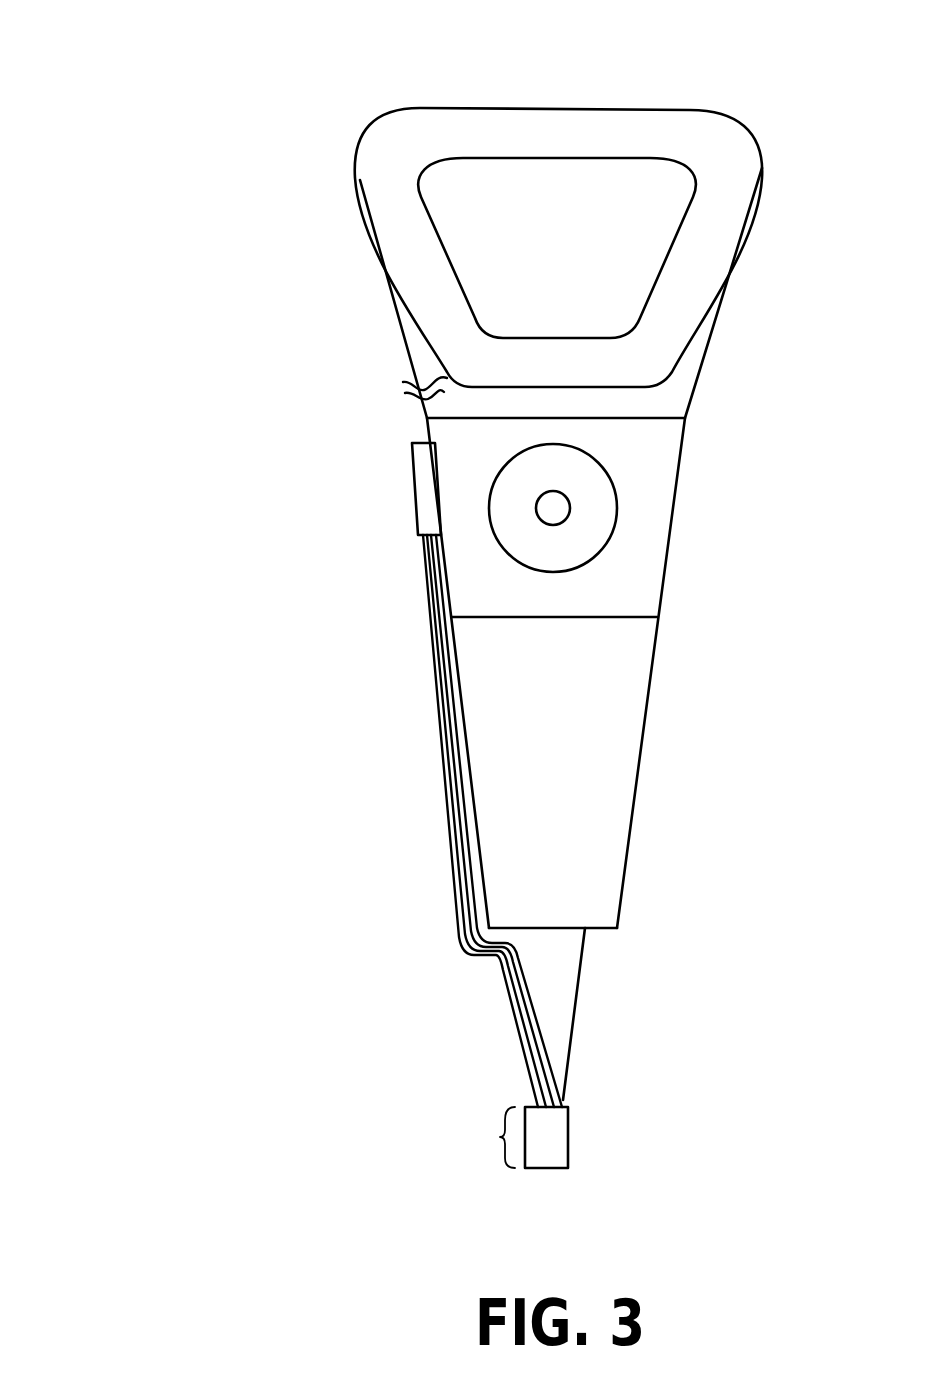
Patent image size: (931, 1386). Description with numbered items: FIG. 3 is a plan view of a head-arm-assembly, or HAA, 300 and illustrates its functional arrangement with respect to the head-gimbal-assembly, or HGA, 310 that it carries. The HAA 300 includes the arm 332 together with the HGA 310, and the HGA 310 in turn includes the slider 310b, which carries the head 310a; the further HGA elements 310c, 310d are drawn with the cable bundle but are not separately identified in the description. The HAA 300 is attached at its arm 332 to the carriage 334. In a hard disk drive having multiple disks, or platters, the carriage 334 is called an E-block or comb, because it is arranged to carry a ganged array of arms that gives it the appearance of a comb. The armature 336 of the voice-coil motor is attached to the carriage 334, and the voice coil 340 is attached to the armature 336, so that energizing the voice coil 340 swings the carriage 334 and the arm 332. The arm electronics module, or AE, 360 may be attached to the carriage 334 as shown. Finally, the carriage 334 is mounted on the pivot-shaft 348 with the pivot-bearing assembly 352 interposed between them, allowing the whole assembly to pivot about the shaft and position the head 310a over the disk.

The head-arm-assembly (HAA) 300 is at (118, 85).
The voice coil 340 is at (425, 277).
The armature 336 is at (425, 357).
The AE (arm electronics) 360 is at (427, 500).
The pivot-shaft 348 is at (553, 508).
The pivot-bearing assembly 352 is at (593, 521).
The carriage 334 is at (623, 575).
The arm 332 is at (548, 718).
The head-gimbal-assembly (HGA) 310 is at (383, 851).
The head 310a is at (533, 1157).
The slider 310b is at (500, 1137).
The third wire 310c is at (513, 1018).
The fourth wire 310d is at (548, 977).